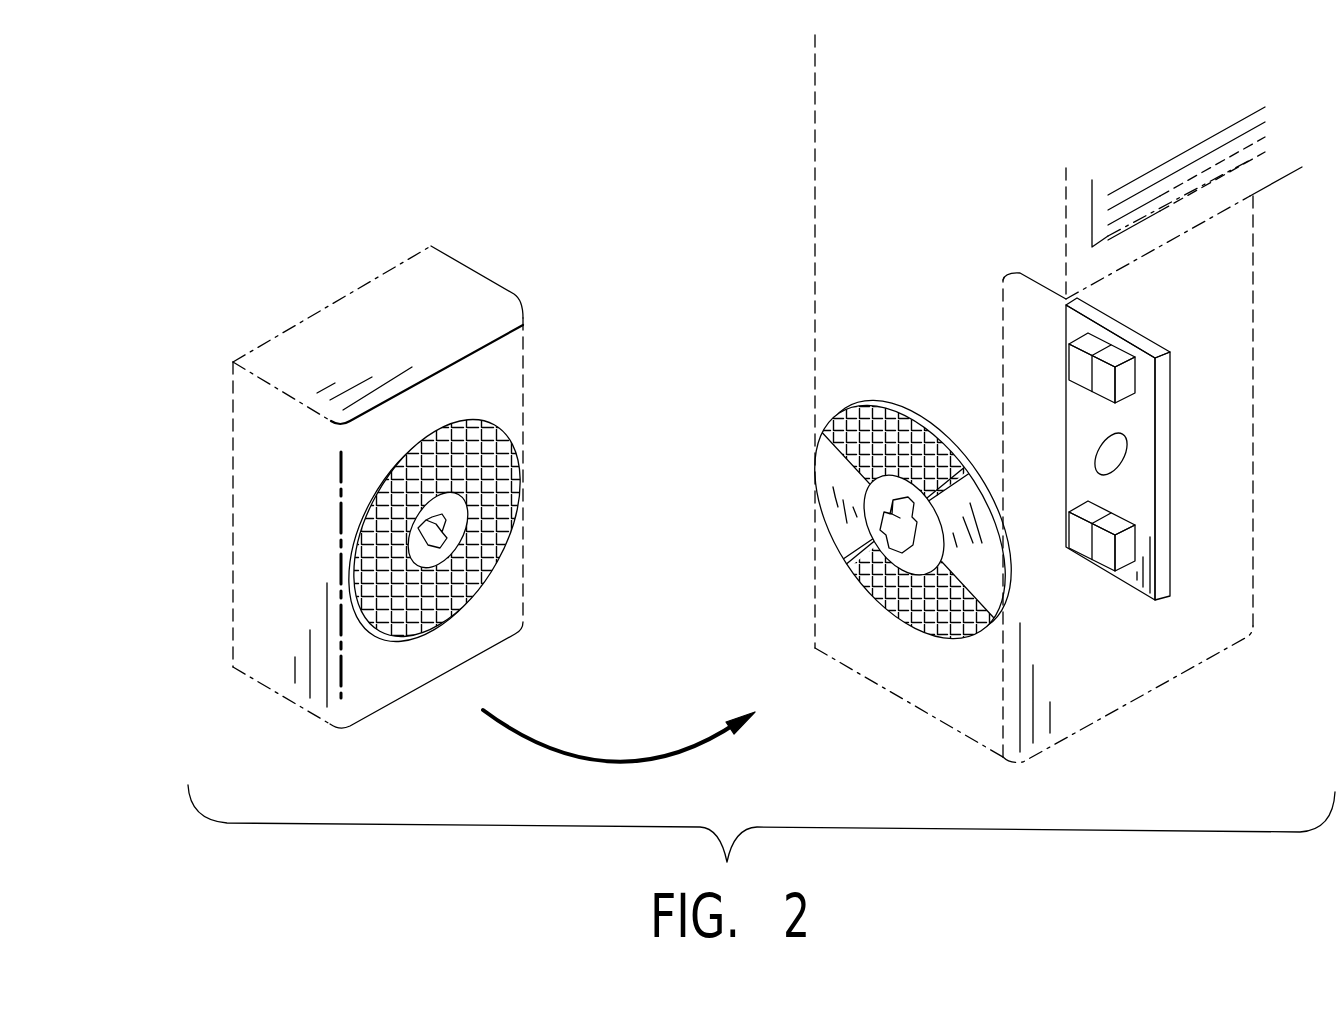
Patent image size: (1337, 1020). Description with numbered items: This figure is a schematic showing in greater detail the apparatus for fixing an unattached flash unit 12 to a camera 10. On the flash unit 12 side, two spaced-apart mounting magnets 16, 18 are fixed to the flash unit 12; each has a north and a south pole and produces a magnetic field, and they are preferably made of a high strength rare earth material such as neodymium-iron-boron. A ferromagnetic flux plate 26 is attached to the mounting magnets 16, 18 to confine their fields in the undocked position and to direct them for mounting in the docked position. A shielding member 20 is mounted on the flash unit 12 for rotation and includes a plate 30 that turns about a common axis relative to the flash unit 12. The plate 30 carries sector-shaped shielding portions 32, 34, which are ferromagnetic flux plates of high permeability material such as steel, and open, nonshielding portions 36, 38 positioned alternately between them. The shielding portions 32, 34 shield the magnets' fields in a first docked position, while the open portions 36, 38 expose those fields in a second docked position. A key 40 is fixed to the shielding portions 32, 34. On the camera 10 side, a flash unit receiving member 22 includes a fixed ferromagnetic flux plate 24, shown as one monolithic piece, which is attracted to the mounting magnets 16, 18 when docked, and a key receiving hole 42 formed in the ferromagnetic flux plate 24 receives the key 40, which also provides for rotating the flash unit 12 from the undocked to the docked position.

The camera 10 is at (338, 298).
The flash unit 12 is at (815, 233).
The mounting magnet 16 is at (1123, 385).
The mounting magnet 18 is at (1088, 507).
The shielding member 20 is at (902, 519).
The flash unit receiving member 22 is at (522, 516).
The ferromagnetic flux plate 24 is at (456, 522).
The ferromagnetic flux plate 26 is at (1165, 532).
The plate 30 is at (933, 437).
The shielding portion 32 is at (890, 428).
The shielding portion 34 is at (950, 635).
The open portion 36 is at (825, 502).
The open portion 38 is at (948, 504).
The key 40 is at (882, 537).
The key receiving hole 42 is at (433, 533).